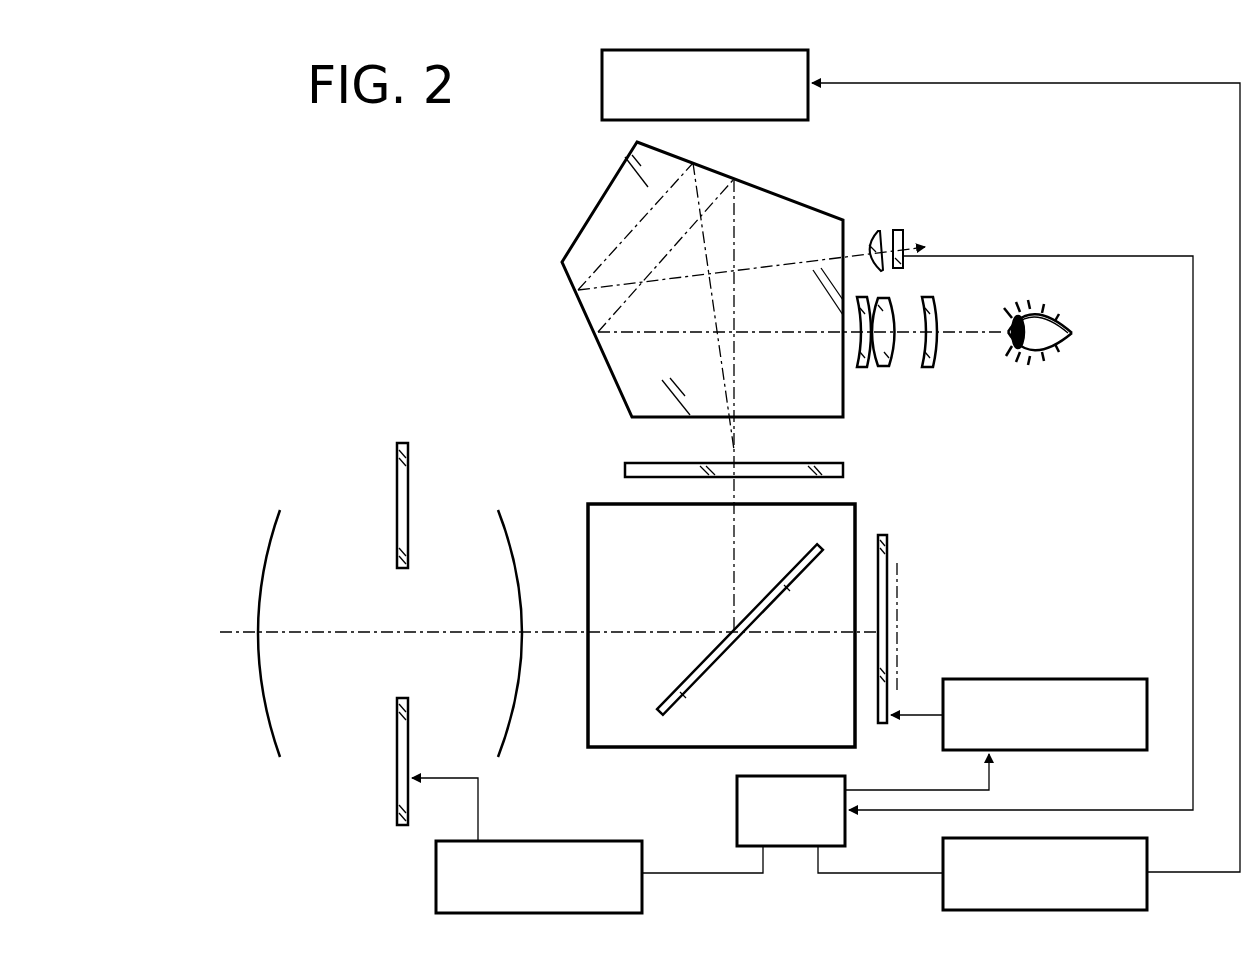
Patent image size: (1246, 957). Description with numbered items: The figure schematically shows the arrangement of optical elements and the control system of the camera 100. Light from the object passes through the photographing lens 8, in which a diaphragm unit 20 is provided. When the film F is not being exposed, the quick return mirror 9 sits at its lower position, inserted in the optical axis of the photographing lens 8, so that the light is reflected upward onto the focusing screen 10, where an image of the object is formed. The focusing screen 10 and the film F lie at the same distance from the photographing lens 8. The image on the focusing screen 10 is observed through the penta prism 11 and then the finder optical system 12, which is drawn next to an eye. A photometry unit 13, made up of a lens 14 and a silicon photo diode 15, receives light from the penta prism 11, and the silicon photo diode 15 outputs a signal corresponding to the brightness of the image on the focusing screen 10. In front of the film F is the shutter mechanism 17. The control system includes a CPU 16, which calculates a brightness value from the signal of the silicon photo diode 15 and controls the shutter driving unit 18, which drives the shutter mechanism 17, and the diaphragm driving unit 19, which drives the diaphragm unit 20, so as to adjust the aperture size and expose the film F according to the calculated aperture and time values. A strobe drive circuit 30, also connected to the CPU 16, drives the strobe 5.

The camera 100 is at (418, 325).
The strobe 5 is at (602, 93).
The penta prism 11 is at (767, 183).
The photometry unit 13 is at (882, 195).
The lens 14 is at (878, 230).
The Silicon Photo Diode (SPD) 15 is at (900, 230).
The finder optical system 12 is at (945, 378).
The focusing screen 10 is at (640, 463).
The photographing lens 8 is at (512, 545).
The diaphragm unit 20 is at (397, 495).
The quick return mirror 9 is at (793, 568).
The shutter mechanism 17 is at (887, 549).
The film F is at (900, 606).
The shutter driving unit 18 is at (1063, 679).
The diaphragm driving unit 19 is at (572, 818).
The CPU 16 is at (737, 812).
The strobe drive circuit 30 is at (1147, 856).